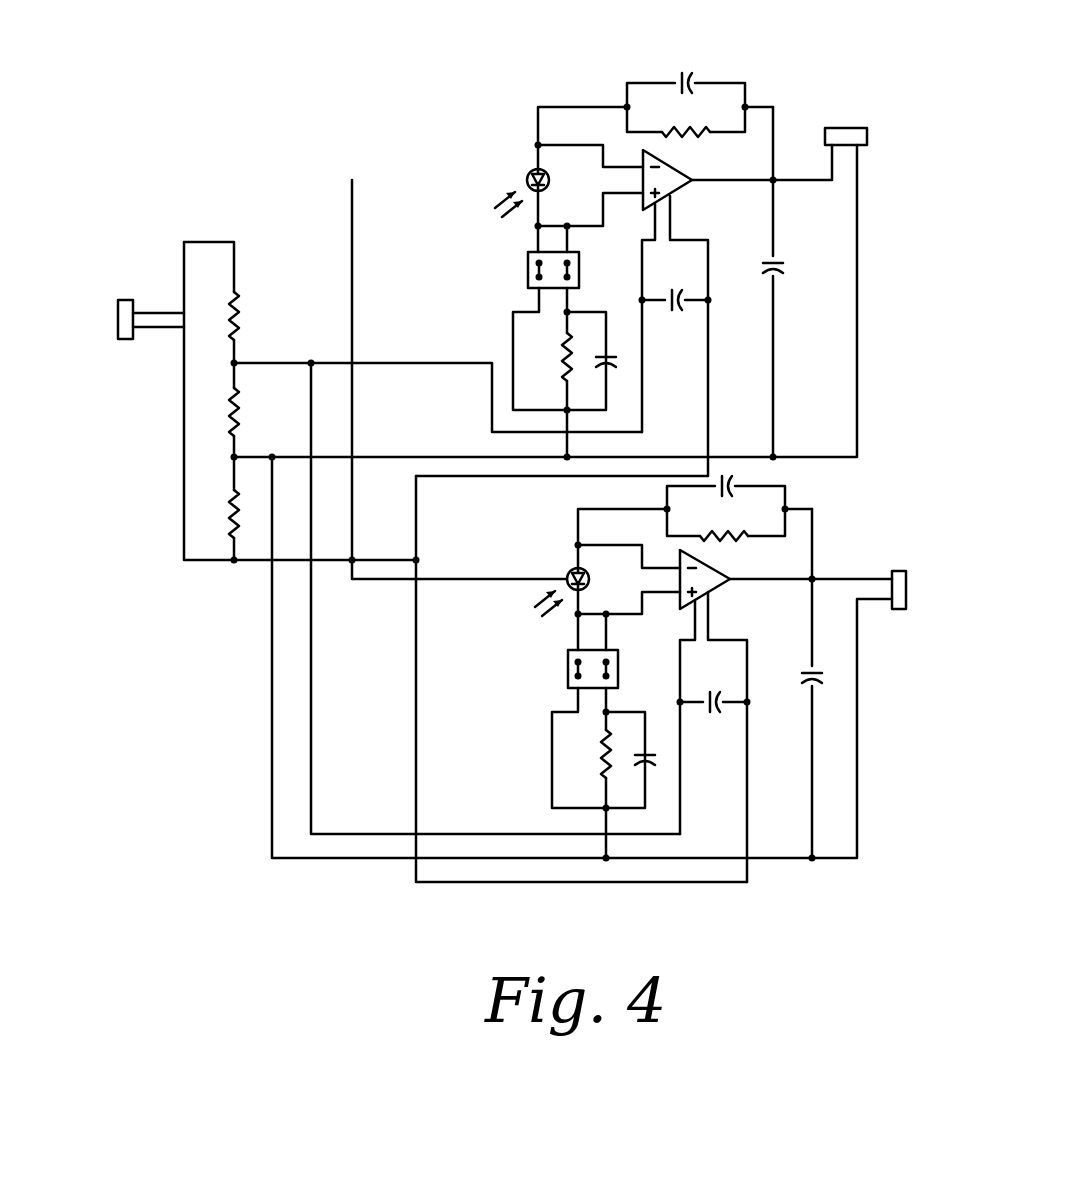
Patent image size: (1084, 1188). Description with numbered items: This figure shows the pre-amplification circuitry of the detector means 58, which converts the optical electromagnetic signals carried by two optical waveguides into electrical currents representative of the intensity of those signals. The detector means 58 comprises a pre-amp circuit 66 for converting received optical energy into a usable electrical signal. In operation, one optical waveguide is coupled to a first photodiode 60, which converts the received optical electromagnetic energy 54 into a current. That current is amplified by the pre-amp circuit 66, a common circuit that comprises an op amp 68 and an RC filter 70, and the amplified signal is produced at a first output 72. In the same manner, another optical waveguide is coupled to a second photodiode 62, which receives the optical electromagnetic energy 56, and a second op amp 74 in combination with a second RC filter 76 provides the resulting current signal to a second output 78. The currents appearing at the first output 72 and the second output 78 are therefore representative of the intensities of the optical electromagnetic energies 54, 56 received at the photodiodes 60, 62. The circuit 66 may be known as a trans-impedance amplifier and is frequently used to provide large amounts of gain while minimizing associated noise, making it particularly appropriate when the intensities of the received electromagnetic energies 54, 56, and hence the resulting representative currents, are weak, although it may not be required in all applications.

The optical electromagnetic energy 54 is at (510, 213).
The optical electromagnetic energy 56 is at (543, 613).
The detector means 58 is at (210, 828).
The first photodiode 60 is at (553, 177).
The second photodiode 62 is at (570, 570).
The pre-amp circuit 66 is at (630, 246).
The op amp 68 is at (665, 178).
The RC filter 70 is at (762, 80).
The first output 72 is at (845, 128).
The op amp 74 is at (705, 575).
The RC filter 76 is at (805, 493).
The second output 78 is at (907, 587).